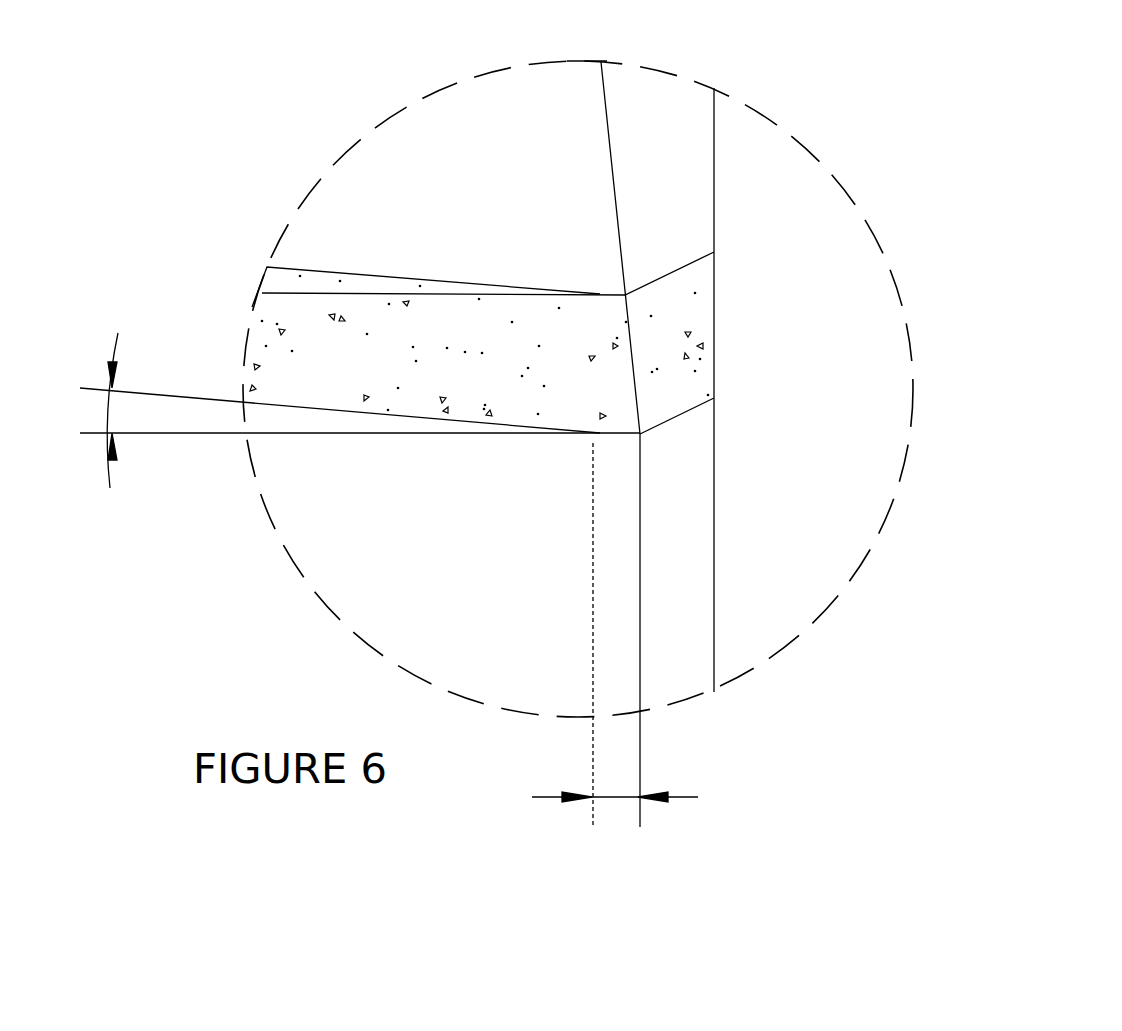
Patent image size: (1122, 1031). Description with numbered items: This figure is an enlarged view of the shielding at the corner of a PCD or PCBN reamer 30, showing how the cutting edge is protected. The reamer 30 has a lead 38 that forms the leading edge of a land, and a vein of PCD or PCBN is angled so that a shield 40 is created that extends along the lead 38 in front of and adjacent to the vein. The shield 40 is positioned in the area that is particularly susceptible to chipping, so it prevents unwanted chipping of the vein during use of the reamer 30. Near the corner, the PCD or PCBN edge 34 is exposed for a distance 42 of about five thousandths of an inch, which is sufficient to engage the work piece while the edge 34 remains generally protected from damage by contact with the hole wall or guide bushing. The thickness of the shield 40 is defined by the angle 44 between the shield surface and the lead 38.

The reamer 30 is at (662, 148).
The cutting edge 34 is at (615, 435).
The lead 38 is at (290, 433).
The shield 40 is at (370, 423).
The distance 42 is at (615, 649).
The angle 44 is at (75, 410).